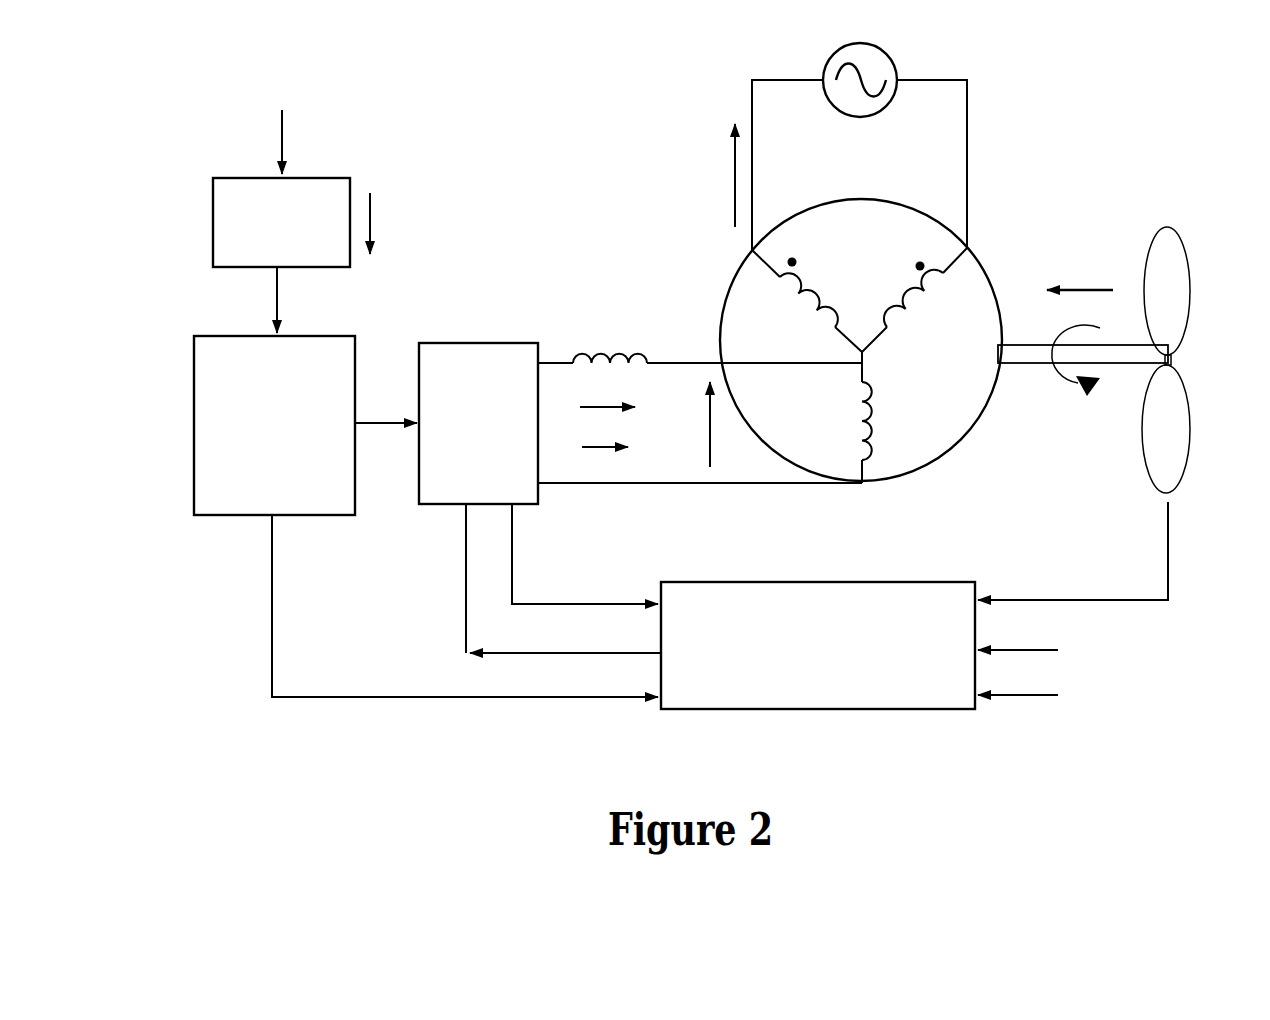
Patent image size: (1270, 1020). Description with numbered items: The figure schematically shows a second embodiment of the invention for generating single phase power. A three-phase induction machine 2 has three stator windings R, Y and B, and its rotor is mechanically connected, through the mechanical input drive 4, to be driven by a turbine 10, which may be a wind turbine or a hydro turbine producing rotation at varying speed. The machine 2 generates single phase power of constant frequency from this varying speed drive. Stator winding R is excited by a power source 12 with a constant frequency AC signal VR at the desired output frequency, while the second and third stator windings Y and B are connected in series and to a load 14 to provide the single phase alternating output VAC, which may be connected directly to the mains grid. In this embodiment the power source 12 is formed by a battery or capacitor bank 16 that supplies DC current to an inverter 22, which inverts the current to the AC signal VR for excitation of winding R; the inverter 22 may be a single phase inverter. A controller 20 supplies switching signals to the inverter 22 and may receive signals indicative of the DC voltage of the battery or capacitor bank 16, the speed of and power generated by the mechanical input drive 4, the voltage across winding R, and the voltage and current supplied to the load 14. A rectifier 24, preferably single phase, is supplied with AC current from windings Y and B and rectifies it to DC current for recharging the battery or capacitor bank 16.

The three-phase induction machine 2 is at (1098, 191).
The mechanical input drive 4 is at (1027, 345).
The turbine 10 is at (1190, 275).
The power source 12 is at (428, 297).
The load 14 is at (897, 70).
The battery or capacitor bank 16 is at (426, 516).
The controller 20 is at (914, 607).
The inverter 22 is at (640, 488).
The rectifier 24 is at (308, 202).